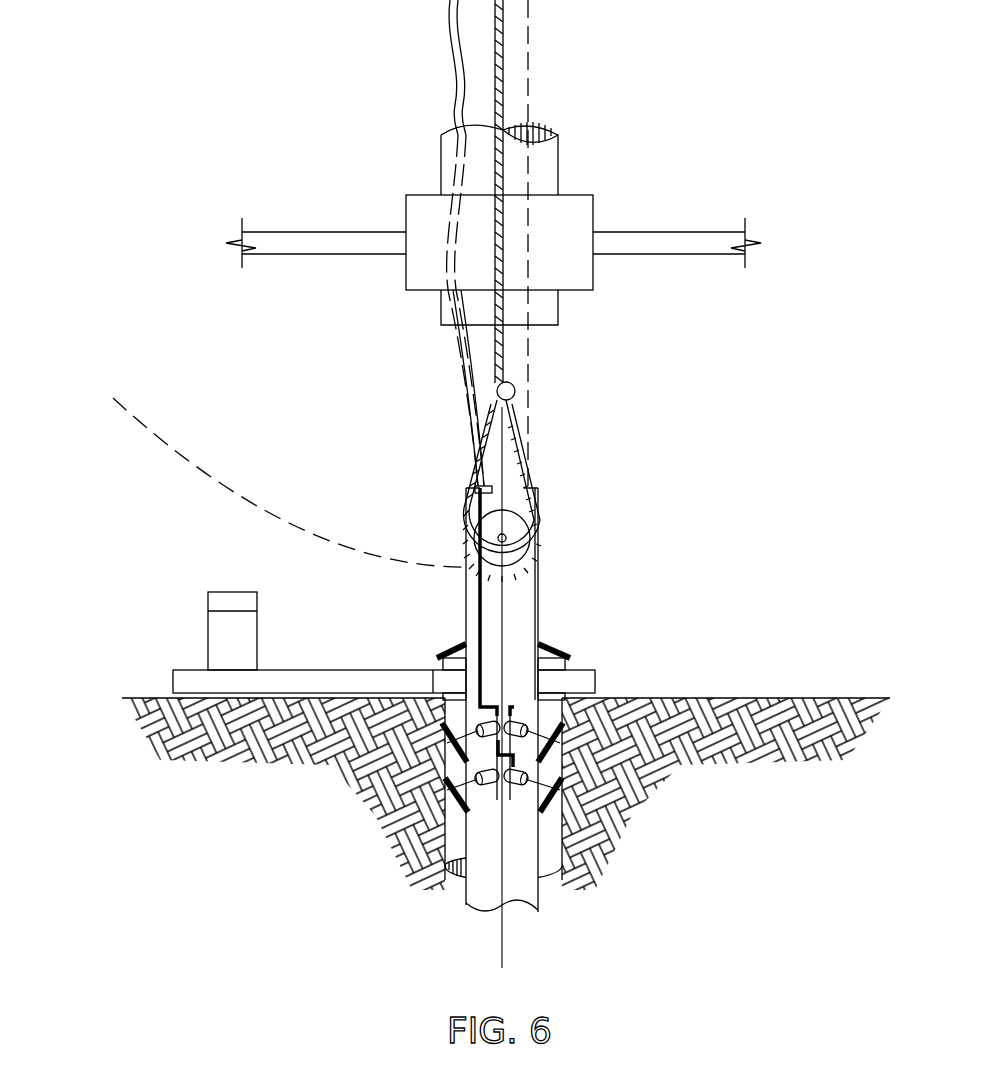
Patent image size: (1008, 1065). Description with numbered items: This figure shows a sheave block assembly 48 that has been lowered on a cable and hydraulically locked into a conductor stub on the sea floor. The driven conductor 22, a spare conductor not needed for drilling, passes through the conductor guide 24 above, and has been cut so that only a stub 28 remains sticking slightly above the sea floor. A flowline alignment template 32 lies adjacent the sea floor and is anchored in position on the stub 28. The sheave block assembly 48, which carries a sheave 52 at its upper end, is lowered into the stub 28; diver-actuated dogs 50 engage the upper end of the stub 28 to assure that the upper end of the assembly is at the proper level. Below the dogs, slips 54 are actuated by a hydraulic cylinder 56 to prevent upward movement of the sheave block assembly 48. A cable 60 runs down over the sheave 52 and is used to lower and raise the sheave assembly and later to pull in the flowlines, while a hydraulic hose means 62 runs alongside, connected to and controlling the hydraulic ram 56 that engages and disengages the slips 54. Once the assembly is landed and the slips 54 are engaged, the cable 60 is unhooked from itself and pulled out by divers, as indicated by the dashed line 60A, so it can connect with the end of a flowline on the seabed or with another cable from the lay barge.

The driven conductor 22 is at (543, 162).
The conductor guide 24 is at (585, 215).
The stub 28 is at (568, 667).
The flowline alignment template 32 is at (290, 675).
The sheave block assembly 48 is at (530, 568).
The diver-actuated dogs 50 is at (540, 645).
The sheave 52 is at (510, 530).
The slips 54 is at (445, 778).
The hydraulic cylinder 56 is at (445, 727).
The cable 60 is at (512, 430).
The dashed line 60A is at (531, 352).
The hydraulic hose means 62 is at (460, 368).